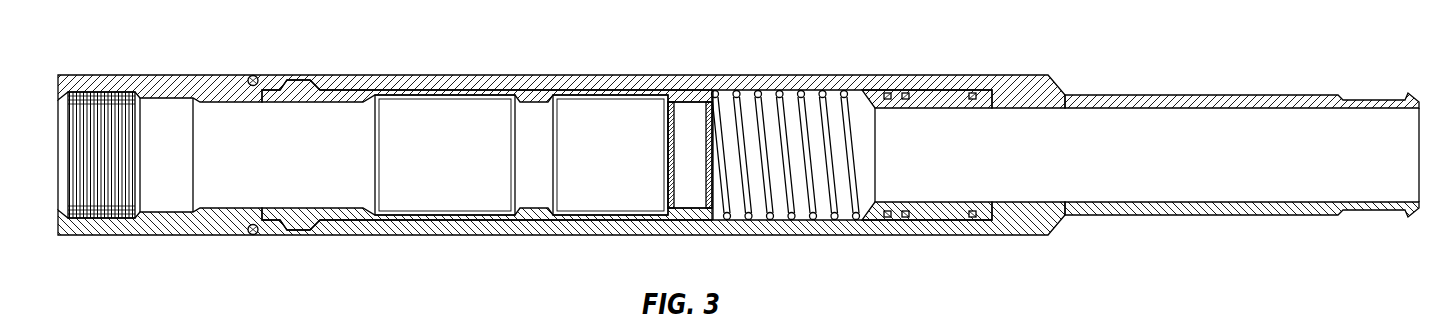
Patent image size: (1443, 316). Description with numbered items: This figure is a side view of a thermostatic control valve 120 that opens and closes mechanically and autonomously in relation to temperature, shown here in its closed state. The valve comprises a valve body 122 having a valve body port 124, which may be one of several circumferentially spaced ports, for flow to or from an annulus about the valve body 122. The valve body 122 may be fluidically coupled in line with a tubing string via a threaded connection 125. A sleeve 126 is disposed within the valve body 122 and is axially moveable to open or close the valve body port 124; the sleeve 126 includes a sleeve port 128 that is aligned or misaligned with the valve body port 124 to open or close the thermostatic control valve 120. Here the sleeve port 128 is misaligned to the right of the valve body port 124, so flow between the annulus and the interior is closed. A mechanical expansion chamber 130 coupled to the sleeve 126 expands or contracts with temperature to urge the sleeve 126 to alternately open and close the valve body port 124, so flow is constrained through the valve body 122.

The thermostatic control valve 120 is at (743, 150).
The valve body 122 is at (1060, 86).
The valve body port 124 is at (638, 237).
The threaded connection 125 is at (102, 100).
The sleeve 126 is at (685, 205).
The sleeve port 128 is at (595, 213).
The mechanical expansion chamber 130 is at (518, 240).